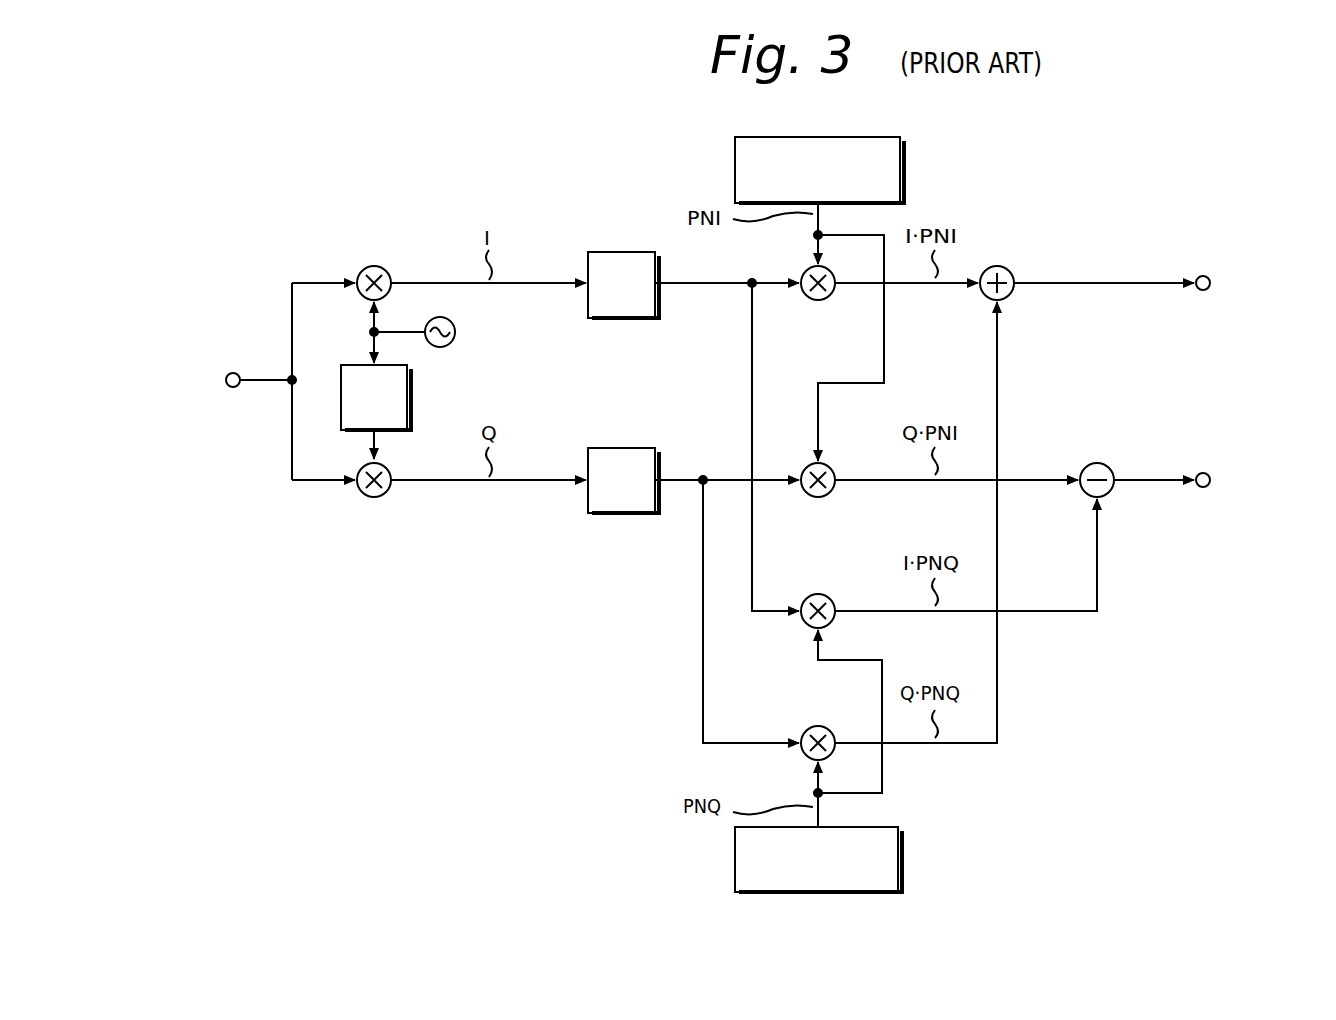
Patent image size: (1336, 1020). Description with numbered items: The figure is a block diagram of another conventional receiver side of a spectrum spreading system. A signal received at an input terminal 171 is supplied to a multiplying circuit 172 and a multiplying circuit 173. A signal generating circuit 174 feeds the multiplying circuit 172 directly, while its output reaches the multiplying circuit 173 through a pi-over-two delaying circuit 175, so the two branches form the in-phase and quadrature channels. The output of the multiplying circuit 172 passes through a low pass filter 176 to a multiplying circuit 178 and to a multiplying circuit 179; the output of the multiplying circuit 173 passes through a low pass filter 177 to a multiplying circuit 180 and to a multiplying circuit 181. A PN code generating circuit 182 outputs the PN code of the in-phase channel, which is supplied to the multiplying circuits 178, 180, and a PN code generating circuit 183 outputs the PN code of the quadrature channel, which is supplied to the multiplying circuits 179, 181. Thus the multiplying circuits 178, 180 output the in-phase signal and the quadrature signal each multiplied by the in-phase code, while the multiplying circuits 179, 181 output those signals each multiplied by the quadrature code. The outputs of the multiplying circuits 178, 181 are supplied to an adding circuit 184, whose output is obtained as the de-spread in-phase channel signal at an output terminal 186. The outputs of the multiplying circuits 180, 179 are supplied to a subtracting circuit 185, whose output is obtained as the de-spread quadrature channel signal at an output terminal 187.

The input terminal 171 is at (224, 378).
The multiplying circuit 172 is at (375, 265).
The multiplying circuit 173 is at (375, 497).
The signal generating circuit 174 is at (456, 333).
The π/2 delaying circuit 175 is at (411, 400).
The low pass filter 176 is at (620, 320).
The low pass filter 177 is at (620, 446).
The multiplying circuit 178 is at (818, 302).
The multiplying circuit 179 is at (818, 608).
The multiplying circuit 180 is at (818, 498).
The multiplying circuit 181 is at (818, 724).
The PN code generating circuit 182 is at (735, 170).
The PN code generating circuit 183 is at (735, 856).
The adding circuit 184 is at (999, 262).
The subtracting circuit 185 is at (1098, 461).
The output terminal 186 is at (1211, 284).
The output terminal 187 is at (1211, 481).